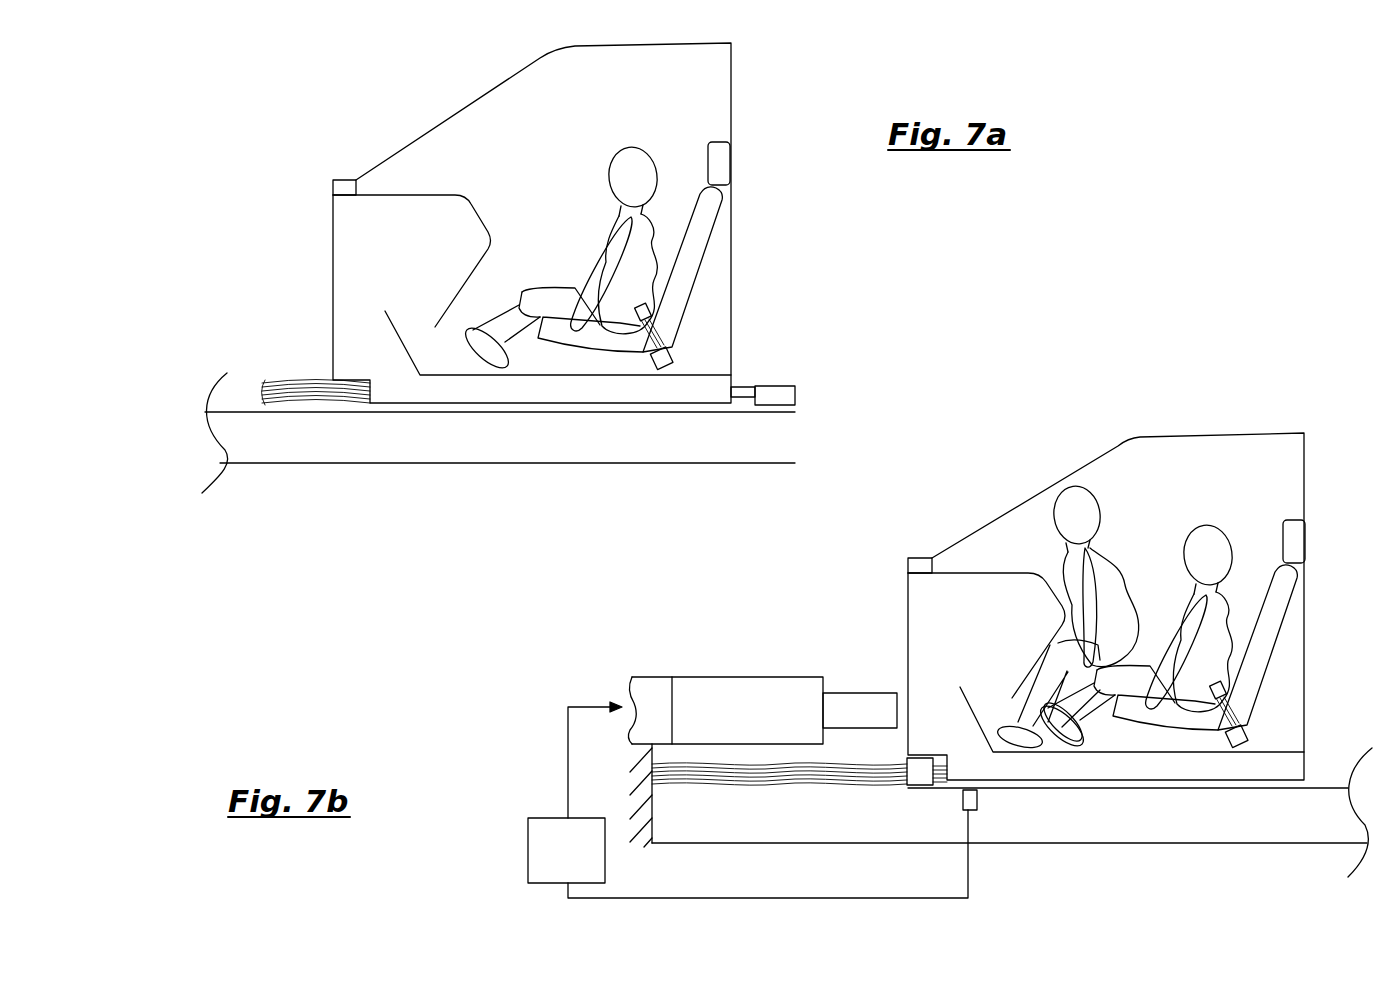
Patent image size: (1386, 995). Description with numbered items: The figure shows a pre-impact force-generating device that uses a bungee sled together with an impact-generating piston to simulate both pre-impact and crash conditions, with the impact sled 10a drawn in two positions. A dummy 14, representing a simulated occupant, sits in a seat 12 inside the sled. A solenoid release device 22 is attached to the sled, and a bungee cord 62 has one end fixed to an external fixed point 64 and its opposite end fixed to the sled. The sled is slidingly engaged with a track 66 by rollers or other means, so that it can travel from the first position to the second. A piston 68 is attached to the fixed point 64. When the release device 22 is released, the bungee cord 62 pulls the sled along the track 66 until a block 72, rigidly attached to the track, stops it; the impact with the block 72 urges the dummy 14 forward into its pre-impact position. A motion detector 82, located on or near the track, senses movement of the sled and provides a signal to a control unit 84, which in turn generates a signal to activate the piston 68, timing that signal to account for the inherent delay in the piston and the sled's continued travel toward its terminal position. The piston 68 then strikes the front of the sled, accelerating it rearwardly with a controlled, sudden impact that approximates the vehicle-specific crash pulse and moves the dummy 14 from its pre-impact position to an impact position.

In FIG. 7A, the test sled 10a is at (413, 138).
In FIG. 7B, the test sled 10a is at (1030, 498).
In FIG. 7A, the vehicle seat 12 is at (708, 172).
In FIG. 7B, the vehicle seat 12 is at (1280, 566).
In FIG. 7A, the dummy 14 is at (608, 176).
In FIG. 7B, the dummy 14 is at (1100, 507).
In FIG. 7A, the release device 22 is at (797, 385).
In FIG. 7A, the bungee cord 62 is at (325, 400).
In FIG. 7B, the bungee cord 62 is at (830, 780).
In FIG. 7B, the external fixed point 64 is at (652, 807).
In FIG. 7B, the track 66 is at (1217, 828).
In FIG. 7B, the piston 68 is at (748, 690).
In FIG. 7B, the block 72 is at (921, 785).
In FIG. 7B, the motion detector 82 is at (977, 800).
In FIG. 7B, the control unit 84 is at (528, 860).